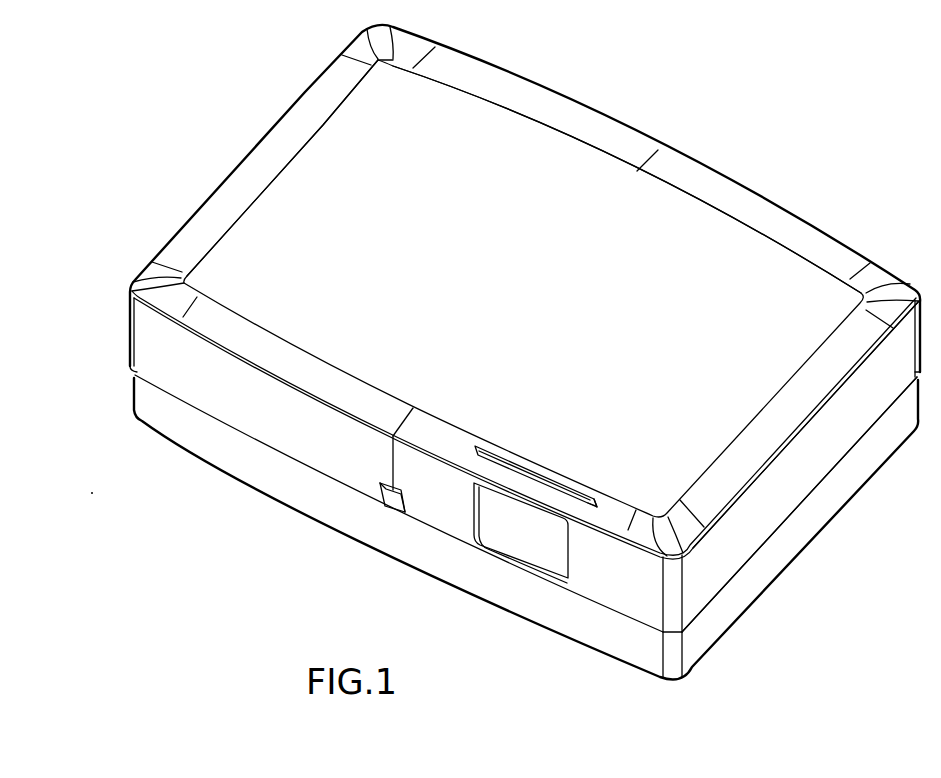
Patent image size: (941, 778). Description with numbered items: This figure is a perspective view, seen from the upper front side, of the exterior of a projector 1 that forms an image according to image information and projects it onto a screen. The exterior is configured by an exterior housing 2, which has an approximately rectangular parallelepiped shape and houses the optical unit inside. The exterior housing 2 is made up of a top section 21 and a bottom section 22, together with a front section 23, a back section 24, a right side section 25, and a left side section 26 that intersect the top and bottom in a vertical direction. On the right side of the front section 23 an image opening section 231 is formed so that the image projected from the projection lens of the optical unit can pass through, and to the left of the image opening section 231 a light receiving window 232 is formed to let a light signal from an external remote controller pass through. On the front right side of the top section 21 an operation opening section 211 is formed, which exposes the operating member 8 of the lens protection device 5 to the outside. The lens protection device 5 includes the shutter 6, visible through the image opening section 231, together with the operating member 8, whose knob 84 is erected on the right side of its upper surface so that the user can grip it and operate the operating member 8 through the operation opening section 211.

The projector 1 is at (190, 108).
The exterior housing 2 is at (697, 174).
The top section 21 is at (522, 133).
The operation opening section 211 is at (497, 443).
The bottom section 22 is at (811, 549).
The front section 23 is at (272, 438).
The image opening section 231 is at (478, 518).
The light receiving window 232 is at (387, 497).
The back section 24 is at (763, 200).
The right side section 25 is at (830, 452).
The left side section 26 is at (247, 153).
The lens protection device 5 is at (529, 673).
The shutter 6 is at (505, 543).
The operating member 8 is at (572, 495).
The knob 84 is at (595, 503).